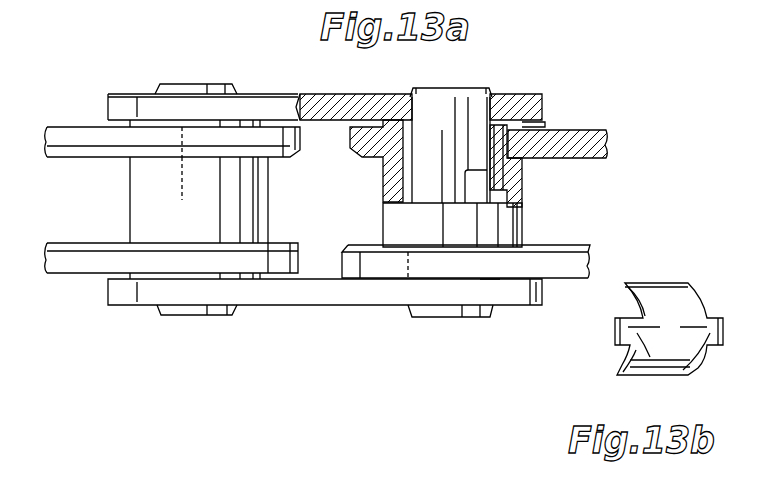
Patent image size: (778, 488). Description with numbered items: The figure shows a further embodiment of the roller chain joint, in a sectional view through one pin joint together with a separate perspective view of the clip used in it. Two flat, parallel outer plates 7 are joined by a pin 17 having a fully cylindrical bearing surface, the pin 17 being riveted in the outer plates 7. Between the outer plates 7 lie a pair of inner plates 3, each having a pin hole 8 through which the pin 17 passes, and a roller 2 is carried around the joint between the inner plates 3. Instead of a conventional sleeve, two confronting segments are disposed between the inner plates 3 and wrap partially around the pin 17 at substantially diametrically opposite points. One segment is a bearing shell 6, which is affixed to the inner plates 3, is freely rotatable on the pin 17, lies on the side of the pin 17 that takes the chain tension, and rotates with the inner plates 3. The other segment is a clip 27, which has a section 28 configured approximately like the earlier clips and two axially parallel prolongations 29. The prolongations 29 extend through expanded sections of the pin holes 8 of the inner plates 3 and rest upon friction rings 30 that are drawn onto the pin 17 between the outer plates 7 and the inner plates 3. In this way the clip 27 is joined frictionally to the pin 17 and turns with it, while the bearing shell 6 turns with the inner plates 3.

In FIG. 13A, the roller 2 is at (400, 220).
In FIG. 13A, the inner plate 3 is at (607, 138).
In FIG. 13A, the bearing shell 6 is at (408, 176).
In FIG. 13A, the outer plate 7 is at (343, 97).
In FIG. 13A, the pin hole 8 is at (508, 145).
In FIG. 13A, the pin 17 is at (470, 112).
In FIG. 13A, the clip 27 is at (487, 190).
In FIG. 13B, the clip 27 is at (665, 302).
In FIG. 13B, the section 28 is at (688, 303).
In FIG. 13B, the prolongation 29 is at (710, 337).
In FIG. 13A, the friction ring 30 is at (544, 127).